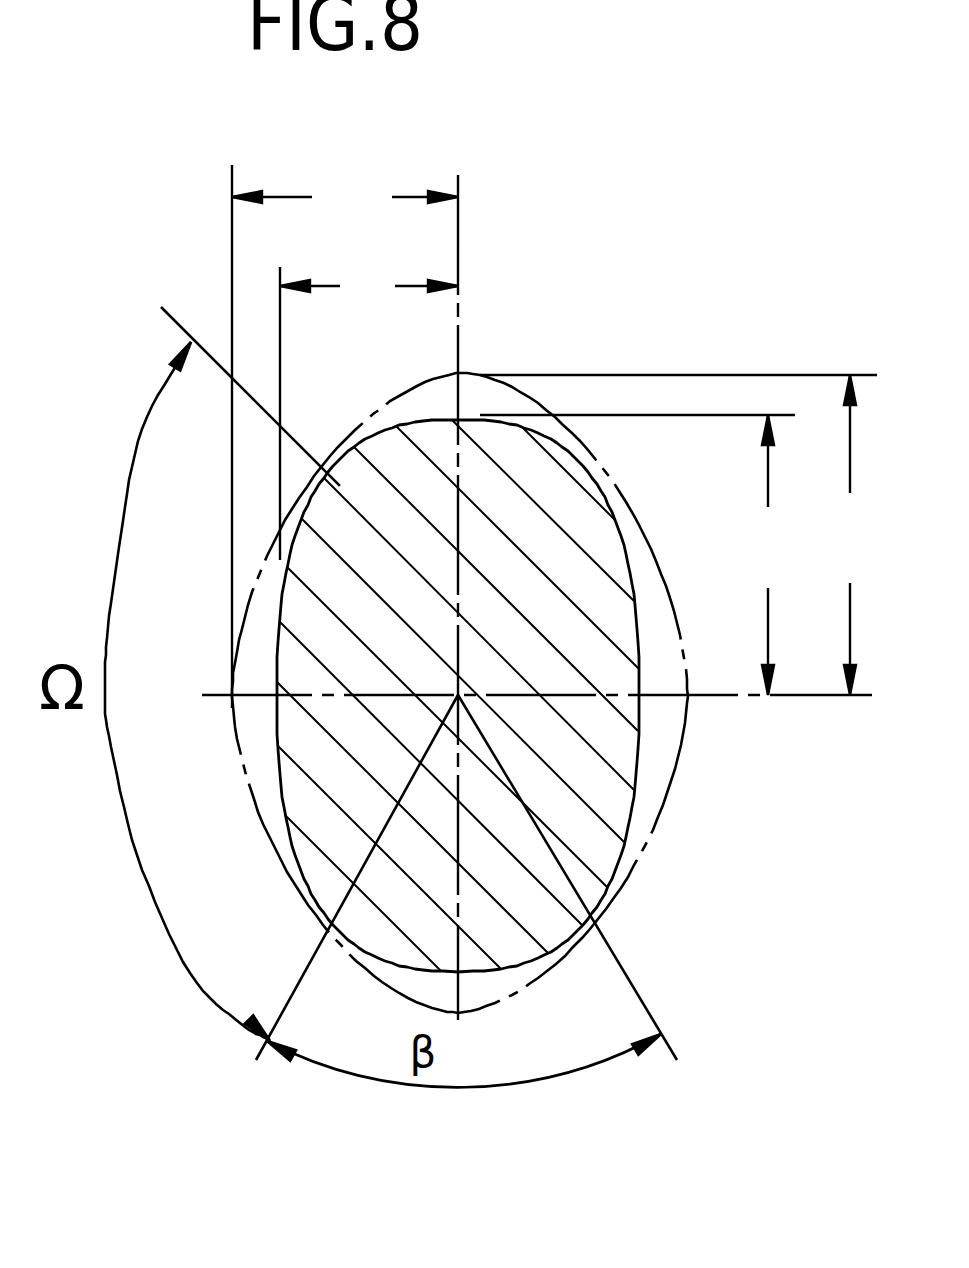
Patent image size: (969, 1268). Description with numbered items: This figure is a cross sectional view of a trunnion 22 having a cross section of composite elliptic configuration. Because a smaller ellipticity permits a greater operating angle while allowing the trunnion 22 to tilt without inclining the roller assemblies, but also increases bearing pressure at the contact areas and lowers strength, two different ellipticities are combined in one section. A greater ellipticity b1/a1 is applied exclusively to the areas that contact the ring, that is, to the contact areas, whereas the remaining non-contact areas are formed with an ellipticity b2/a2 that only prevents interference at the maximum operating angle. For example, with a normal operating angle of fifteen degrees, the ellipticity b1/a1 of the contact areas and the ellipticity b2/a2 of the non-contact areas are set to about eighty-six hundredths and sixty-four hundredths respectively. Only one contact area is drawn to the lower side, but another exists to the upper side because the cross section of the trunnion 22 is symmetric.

The trunnion 22 is at (292, 770).
The ellipticity a1 (contact-area semi-axis) a1 is at (637, 555).
The ellipticity a2 (non-contact-area semi-axis) a2 is at (682, 535).
The ellipticity b1 (contact-area semi-axis) b1 is at (345, 436).
The ellipticity b2 (non-contact-area semi-axis) b2 is at (369, 411).